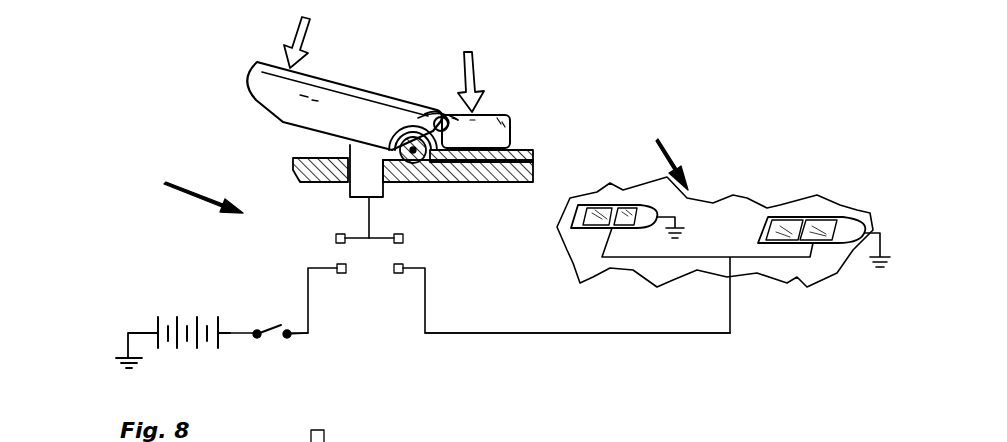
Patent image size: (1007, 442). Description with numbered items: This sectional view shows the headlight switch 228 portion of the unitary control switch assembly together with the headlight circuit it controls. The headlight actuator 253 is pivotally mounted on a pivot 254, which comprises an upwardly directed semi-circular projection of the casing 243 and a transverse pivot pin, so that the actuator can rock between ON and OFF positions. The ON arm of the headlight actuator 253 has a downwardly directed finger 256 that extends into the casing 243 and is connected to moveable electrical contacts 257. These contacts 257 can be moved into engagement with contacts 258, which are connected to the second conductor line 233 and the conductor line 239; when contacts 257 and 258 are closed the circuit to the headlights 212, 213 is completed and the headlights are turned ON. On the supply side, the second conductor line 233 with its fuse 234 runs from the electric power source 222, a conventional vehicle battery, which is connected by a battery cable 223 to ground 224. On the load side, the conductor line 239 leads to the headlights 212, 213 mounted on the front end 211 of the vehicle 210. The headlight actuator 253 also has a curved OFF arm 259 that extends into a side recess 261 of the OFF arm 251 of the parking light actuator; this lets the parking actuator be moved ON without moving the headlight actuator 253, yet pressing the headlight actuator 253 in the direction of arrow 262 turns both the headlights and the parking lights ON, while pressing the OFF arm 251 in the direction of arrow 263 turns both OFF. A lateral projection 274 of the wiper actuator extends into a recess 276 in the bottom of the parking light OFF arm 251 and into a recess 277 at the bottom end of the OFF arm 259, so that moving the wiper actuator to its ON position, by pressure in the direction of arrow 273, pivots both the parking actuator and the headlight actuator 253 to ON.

The headlight actuator 253 is at (314, 84).
The arrow 262 is at (299, 28).
The arrow 263 is at (468, 53).
The headlight switch 228 is at (180, 187).
The ground 224 is at (424, 108).
The side recess 261 is at (450, 118).
The OFF arm 259 is at (420, 102).
The recess 277 is at (403, 141).
The lateral projection 274 is at (484, 182).
The OFF arm 251 is at (497, 113).
The recess 276 is at (510, 154).
The casing 243 is at (510, 184).
The pivot 254 is at (402, 184).
The finger 256 is at (343, 192).
The moveable electrical contacts 257 is at (336, 238).
The contacts 258 is at (342, 273).
The conductor line 239 is at (584, 334).
The electric power source 222 is at (198, 319).
The battery cable 223 is at (138, 327).
The fuse 234 is at (269, 328).
The second conductor line 233 is at (260, 340).
The vehicle 210 is at (715, 202).
The headlight 212 is at (598, 202).
The headlight 213 is at (778, 216).
The front end 211 is at (646, 279).
The arrow 273 is at (328, 434).